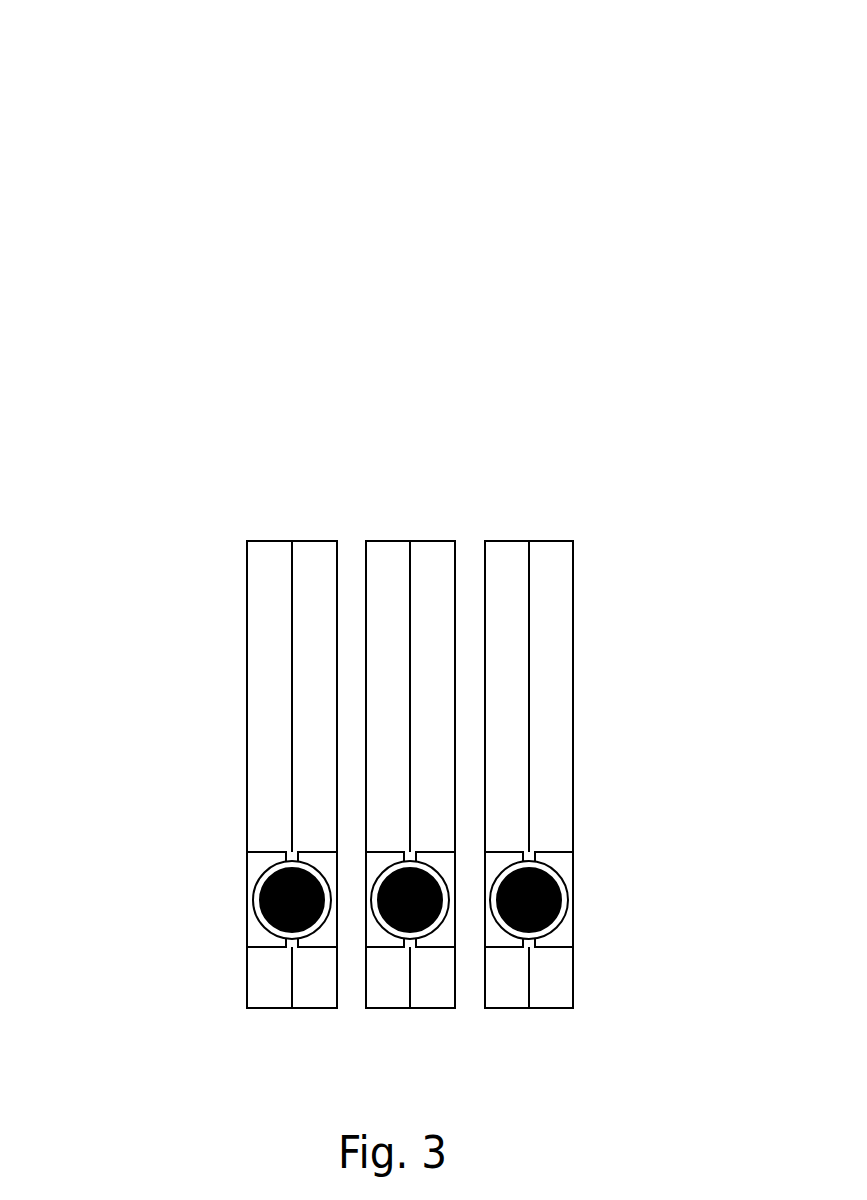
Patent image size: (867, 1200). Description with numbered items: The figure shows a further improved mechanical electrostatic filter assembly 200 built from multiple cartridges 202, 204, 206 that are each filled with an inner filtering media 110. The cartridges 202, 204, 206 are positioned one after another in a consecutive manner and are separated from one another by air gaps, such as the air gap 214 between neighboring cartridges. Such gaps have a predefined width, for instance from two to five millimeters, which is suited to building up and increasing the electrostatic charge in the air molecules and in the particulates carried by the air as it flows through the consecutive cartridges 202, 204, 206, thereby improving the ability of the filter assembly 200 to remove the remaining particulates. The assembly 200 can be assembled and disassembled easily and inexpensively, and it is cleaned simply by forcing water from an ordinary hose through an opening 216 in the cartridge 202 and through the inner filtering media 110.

The improved mechanical electrostatic filter assembly 200 is at (443, 167).
The cartridge 202 is at (267, 548).
The cartridge 204 is at (388, 548).
The cartridge 206 is at (535, 542).
The air gap 214 is at (463, 538).
The opening 216 is at (263, 880).
The inner filtering media 110 is at (260, 915).